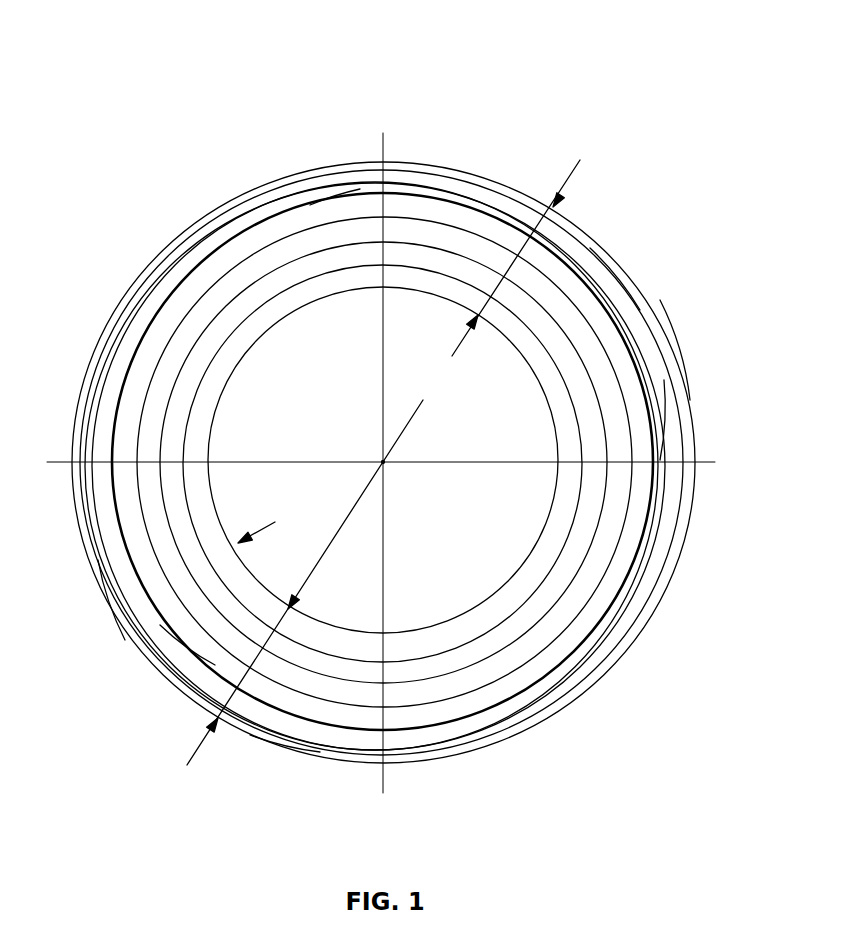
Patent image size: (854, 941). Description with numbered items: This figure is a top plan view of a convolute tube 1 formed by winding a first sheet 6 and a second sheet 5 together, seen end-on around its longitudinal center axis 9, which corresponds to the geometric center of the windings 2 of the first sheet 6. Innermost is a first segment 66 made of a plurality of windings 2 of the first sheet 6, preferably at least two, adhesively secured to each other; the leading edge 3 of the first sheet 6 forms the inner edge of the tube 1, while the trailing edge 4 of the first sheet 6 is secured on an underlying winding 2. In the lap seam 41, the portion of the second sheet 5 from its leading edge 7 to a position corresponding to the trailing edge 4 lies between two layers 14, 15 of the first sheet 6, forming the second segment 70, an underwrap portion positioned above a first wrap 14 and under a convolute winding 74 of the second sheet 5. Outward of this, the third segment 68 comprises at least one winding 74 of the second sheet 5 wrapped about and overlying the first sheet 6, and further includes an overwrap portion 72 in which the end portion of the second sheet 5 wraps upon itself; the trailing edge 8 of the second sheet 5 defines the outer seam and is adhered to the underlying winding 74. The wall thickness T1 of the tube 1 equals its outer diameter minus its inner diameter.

The convolute tube 1 is at (235, 50).
The windings 2 is at (303, 283).
The leading edge 3 is at (212, 420).
The trailing edge 4 is at (460, 188).
The second sheet 5 is at (652, 332).
The first sheet 6 is at (185, 628).
The leading edge 7 is at (657, 420).
The trailing edge 8 is at (283, 748).
The longitudinal center axis 9 is at (383, 462).
The first wrap 14 is at (567, 273).
The layer 15 is at (518, 203).
The lap seam 41 is at (500, 185).
The first segment 66 is at (620, 518).
The third segment 68 is at (357, 190).
The second segment 70 is at (574, 168).
The overwrap portion 72 is at (150, 263).
The windings 74 is at (333, 188).
The wall thickness T1 is at (105, 605).